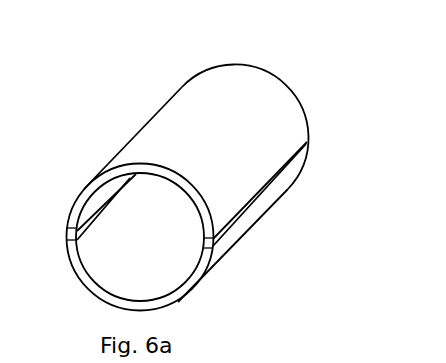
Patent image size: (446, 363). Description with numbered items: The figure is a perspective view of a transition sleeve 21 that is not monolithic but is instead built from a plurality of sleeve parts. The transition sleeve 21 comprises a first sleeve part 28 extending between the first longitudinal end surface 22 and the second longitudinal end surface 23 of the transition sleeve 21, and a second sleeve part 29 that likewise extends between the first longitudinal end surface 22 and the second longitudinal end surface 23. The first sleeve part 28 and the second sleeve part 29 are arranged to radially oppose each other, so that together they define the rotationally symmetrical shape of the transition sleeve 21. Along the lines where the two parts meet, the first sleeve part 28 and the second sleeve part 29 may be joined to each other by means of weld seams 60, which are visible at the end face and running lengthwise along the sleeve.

The transition sleeve 21 is at (113, 87).
The first longitudinal end surface 22 is at (172, 300).
The second longitudinal end surface 23 is at (291, 90).
The first sleeve part 28 is at (182, 118).
The second sleeve part 29 is at (235, 235).
The weld seams 60 is at (113, 198).